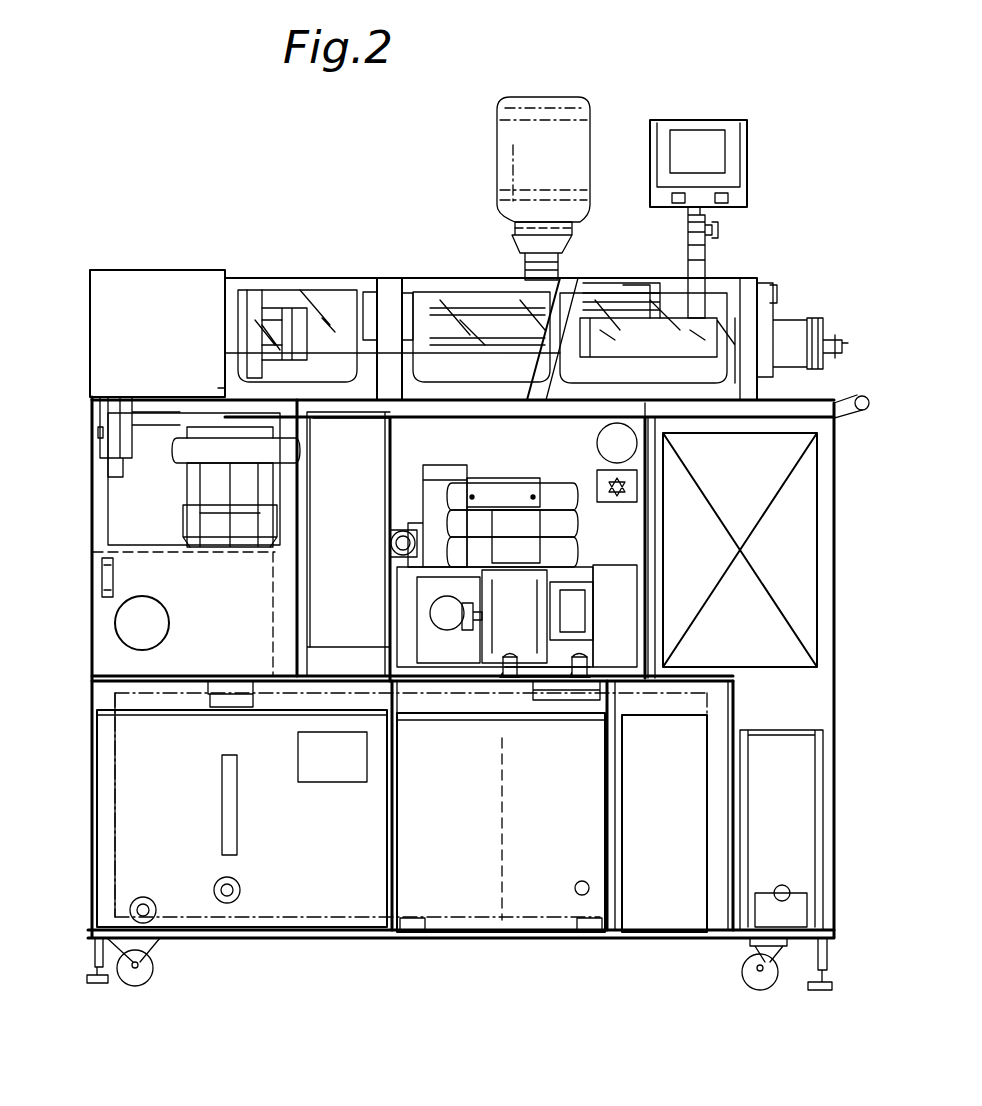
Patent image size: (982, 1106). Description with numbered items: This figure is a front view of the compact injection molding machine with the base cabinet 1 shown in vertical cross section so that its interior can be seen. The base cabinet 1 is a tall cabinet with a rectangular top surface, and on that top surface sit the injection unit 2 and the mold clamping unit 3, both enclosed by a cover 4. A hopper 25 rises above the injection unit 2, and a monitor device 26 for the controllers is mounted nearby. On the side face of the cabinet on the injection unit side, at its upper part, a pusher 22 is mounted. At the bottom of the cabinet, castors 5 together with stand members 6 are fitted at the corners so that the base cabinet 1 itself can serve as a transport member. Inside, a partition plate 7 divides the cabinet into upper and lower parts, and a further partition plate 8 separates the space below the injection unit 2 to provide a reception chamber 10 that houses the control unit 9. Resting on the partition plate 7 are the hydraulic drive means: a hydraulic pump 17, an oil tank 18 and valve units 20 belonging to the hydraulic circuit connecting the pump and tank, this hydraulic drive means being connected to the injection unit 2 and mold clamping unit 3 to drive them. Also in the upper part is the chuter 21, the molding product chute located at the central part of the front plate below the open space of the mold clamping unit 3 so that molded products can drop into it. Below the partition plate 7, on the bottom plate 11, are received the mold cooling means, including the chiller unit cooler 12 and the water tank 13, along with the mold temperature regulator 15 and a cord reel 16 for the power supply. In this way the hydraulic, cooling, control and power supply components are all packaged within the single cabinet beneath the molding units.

The base cabinet 1 is at (85, 437).
The injection unit 2 is at (677, 327).
The mold clamping unit 3 is at (340, 313).
The cover 4 is at (190, 290).
The castors 5 is at (138, 978).
The stand members 6 is at (98, 985).
The partition plate 7 is at (255, 672).
The partition plate 8 is at (643, 590).
The control unit 9 is at (773, 643).
The reception chamber 10 is at (750, 677).
The bottom plate 11 is at (433, 933).
The chiller unit cooler 12 is at (280, 903).
The water tank 13 is at (528, 900).
The mold temperature regulator 15 is at (663, 917).
The cord reel 16 is at (770, 812).
The hydraulic pump 17 is at (528, 647).
The oil tank 18 is at (183, 593).
The valve units 20 is at (205, 513).
The chuter 21 is at (335, 615).
The pusher 22 is at (857, 396).
The hopper 25 is at (520, 160).
The monitor device 26 is at (692, 143).